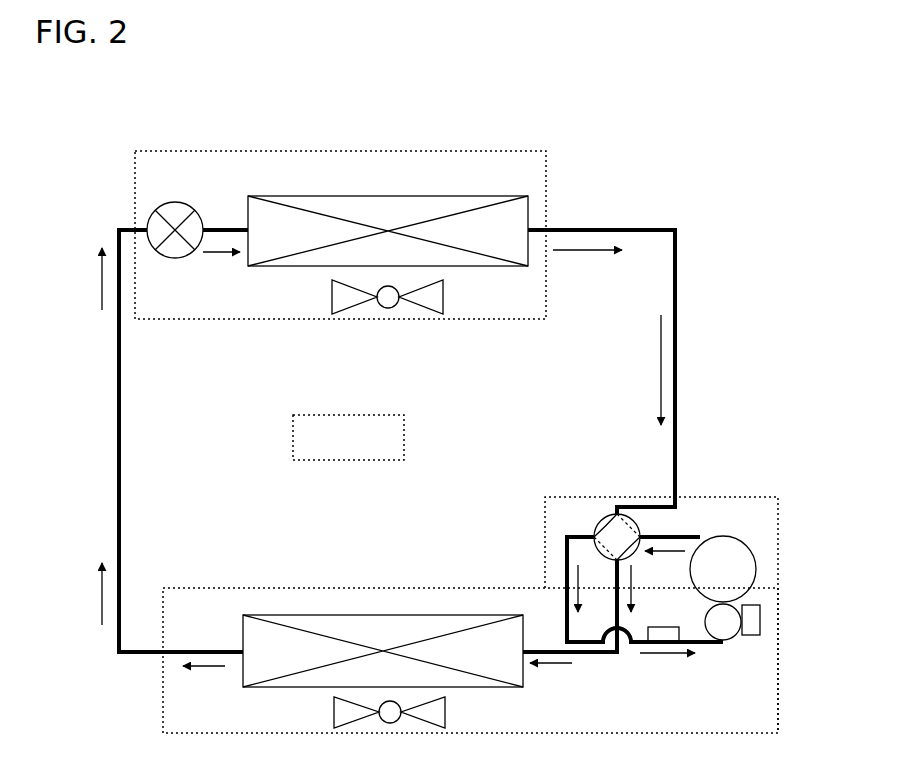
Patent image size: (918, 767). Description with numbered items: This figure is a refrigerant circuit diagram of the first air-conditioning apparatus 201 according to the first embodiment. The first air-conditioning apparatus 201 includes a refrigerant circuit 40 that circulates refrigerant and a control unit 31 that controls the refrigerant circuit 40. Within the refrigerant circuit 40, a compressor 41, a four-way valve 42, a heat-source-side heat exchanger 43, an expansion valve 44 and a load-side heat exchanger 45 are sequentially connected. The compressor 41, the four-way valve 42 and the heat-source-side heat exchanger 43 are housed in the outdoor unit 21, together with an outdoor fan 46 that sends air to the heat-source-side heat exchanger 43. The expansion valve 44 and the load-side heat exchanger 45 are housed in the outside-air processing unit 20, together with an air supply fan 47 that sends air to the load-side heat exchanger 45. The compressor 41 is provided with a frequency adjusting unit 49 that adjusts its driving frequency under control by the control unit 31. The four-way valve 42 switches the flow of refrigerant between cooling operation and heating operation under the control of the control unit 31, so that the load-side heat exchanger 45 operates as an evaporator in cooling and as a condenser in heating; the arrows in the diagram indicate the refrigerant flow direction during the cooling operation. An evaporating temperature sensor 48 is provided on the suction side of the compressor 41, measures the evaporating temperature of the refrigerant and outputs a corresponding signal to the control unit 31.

The outside-air processing unit 20 is at (348, 143).
The outdoor unit 21 is at (424, 579).
The first air-conditioning apparatus 201 is at (642, 143).
The control unit 31 is at (397, 429).
The refrigerant circuit 40 is at (668, 273).
The compressor 41 is at (729, 538).
The four-way valve 42 is at (590, 519).
The heat-source-side heat exchanger 43 is at (266, 680).
The expansion valve 44 is at (169, 194).
The load-side heat exchanger 45 is at (268, 258).
The outdoor fan 46 is at (439, 704).
The air supply fan 47 is at (437, 290).
The evaporating temperature sensor 48 is at (656, 635).
The frequency adjusting unit 49 is at (739, 628).